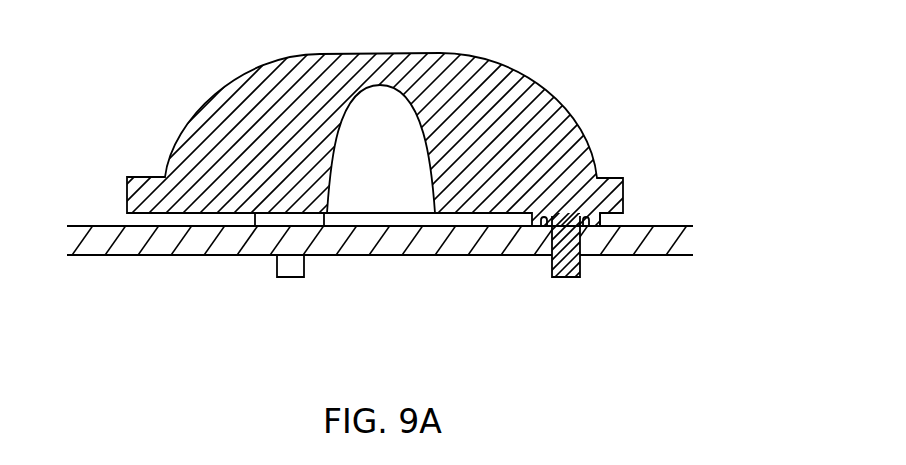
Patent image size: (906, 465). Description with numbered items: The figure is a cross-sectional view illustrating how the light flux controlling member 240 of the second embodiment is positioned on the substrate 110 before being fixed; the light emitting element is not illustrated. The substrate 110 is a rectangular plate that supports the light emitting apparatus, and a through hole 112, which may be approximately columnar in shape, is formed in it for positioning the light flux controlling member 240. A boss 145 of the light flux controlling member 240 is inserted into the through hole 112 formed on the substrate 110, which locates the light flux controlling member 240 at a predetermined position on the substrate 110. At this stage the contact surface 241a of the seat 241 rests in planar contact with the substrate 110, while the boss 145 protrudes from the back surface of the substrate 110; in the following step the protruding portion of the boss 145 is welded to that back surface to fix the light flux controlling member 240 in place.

The light flux controlling member 240 is at (225, 113).
The seat 241 is at (600, 218).
The contact surface 241a is at (545, 226).
The through hole 112 is at (552, 228).
The substrate 110 is at (133, 247).
The boss 145 is at (290, 270).